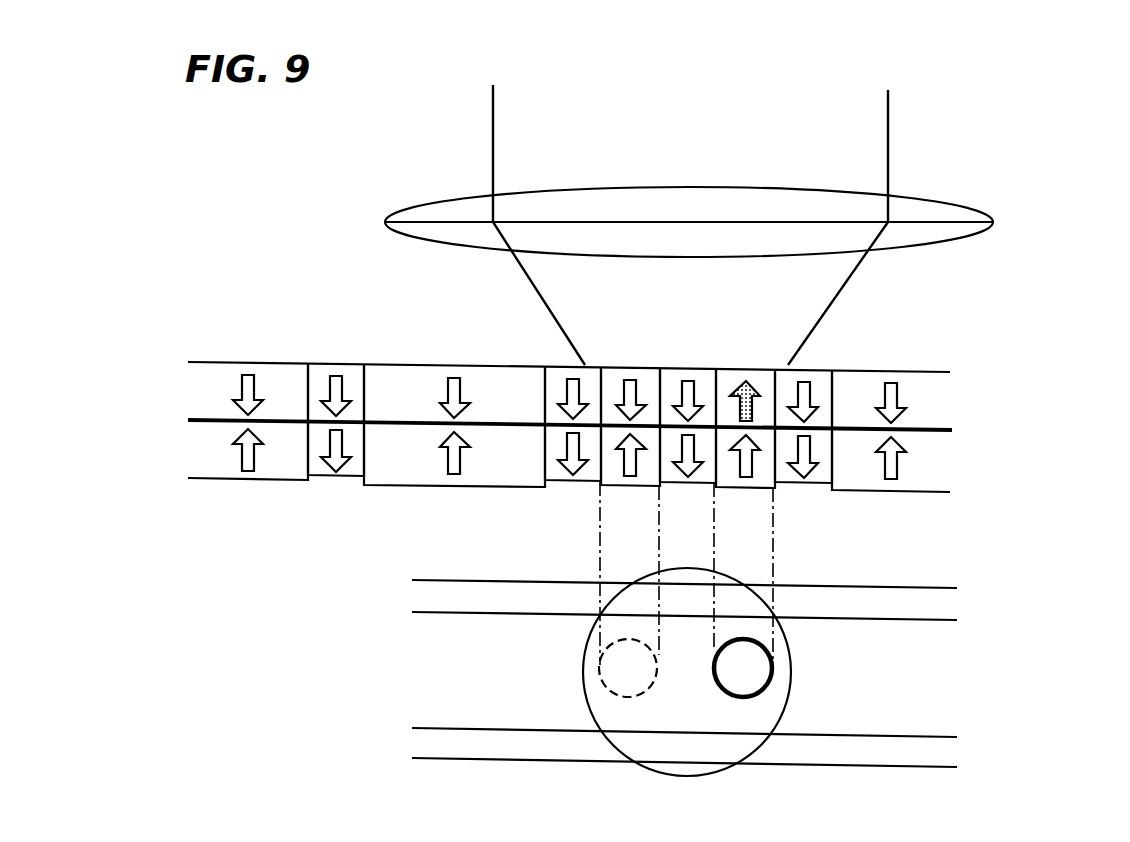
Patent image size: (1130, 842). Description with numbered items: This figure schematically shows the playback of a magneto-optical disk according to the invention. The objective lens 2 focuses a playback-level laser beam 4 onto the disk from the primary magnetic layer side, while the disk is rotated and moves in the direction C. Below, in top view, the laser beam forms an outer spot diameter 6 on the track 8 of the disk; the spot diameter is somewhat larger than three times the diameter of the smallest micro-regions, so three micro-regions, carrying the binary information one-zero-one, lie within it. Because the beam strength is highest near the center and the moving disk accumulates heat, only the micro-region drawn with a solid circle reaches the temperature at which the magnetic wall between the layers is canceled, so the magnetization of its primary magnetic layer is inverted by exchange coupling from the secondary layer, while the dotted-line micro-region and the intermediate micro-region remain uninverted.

The objective lens 2 is at (437, 197).
The laser beam 4 is at (706, 132).
The outer spot diameter 6 is at (756, 594).
The track 8 is at (554, 682).
The direction of disk movement C is at (973, 431).